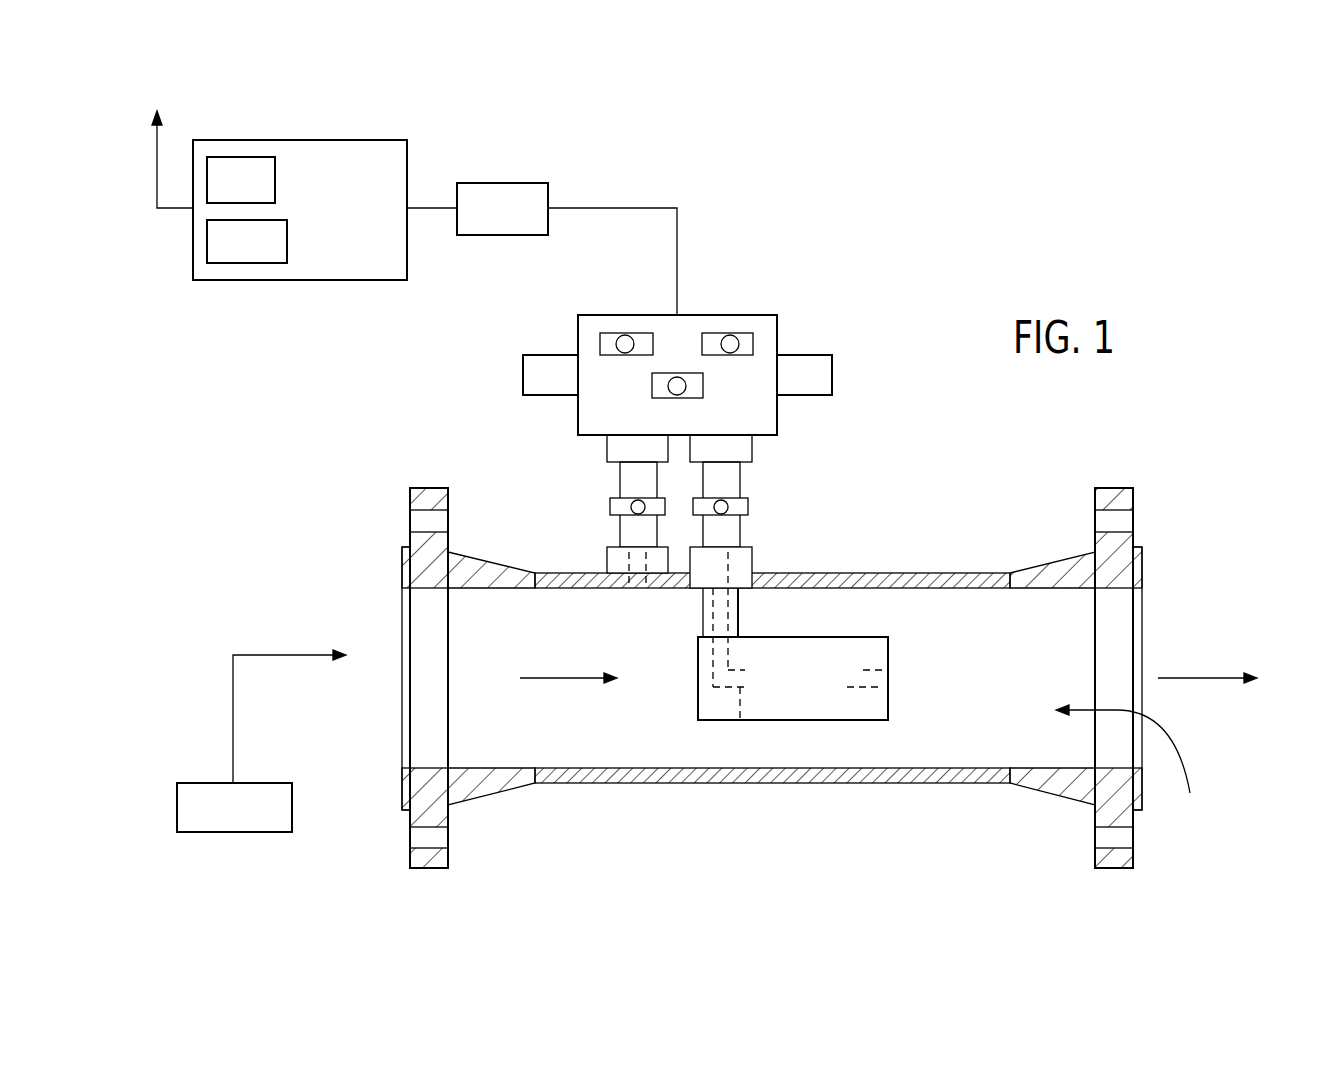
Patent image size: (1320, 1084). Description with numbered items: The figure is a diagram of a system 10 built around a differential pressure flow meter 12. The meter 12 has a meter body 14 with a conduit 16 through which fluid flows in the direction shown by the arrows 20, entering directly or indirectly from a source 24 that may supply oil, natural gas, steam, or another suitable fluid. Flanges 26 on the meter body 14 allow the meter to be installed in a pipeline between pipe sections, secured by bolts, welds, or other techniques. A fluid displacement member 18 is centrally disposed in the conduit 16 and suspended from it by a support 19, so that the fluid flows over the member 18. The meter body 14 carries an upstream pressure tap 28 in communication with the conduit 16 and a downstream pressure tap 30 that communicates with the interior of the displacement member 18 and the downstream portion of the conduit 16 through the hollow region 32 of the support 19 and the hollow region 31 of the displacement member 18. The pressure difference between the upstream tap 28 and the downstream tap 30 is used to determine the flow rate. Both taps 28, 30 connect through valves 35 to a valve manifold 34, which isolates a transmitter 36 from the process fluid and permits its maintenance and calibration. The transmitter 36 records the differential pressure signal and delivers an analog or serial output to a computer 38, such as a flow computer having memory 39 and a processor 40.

The system 10 is at (915, 310).
The differential pressure flow meter 12 is at (845, 530).
The meter body 14 is at (802, 785).
The conduit 16 is at (1131, 766).
The fluid displacement member 18 is at (845, 722).
The support 19 is at (738, 610).
The arrows 20 is at (297, 655).
The source 24 is at (175, 808).
The flanges 26 is at (432, 487).
The upstream pressure tap 28 is at (607, 560).
The downstream pressure tap 30 is at (752, 560).
The hollow region 31 is at (698, 607).
The hollow region 32 is at (740, 720).
The valve manifold 34 is at (777, 325).
The valves 35 is at (610, 505).
The transmitter 36 is at (537, 180).
The computer 38 is at (408, 158).
The memory 39 is at (243, 157).
The processor 40 is at (270, 263).